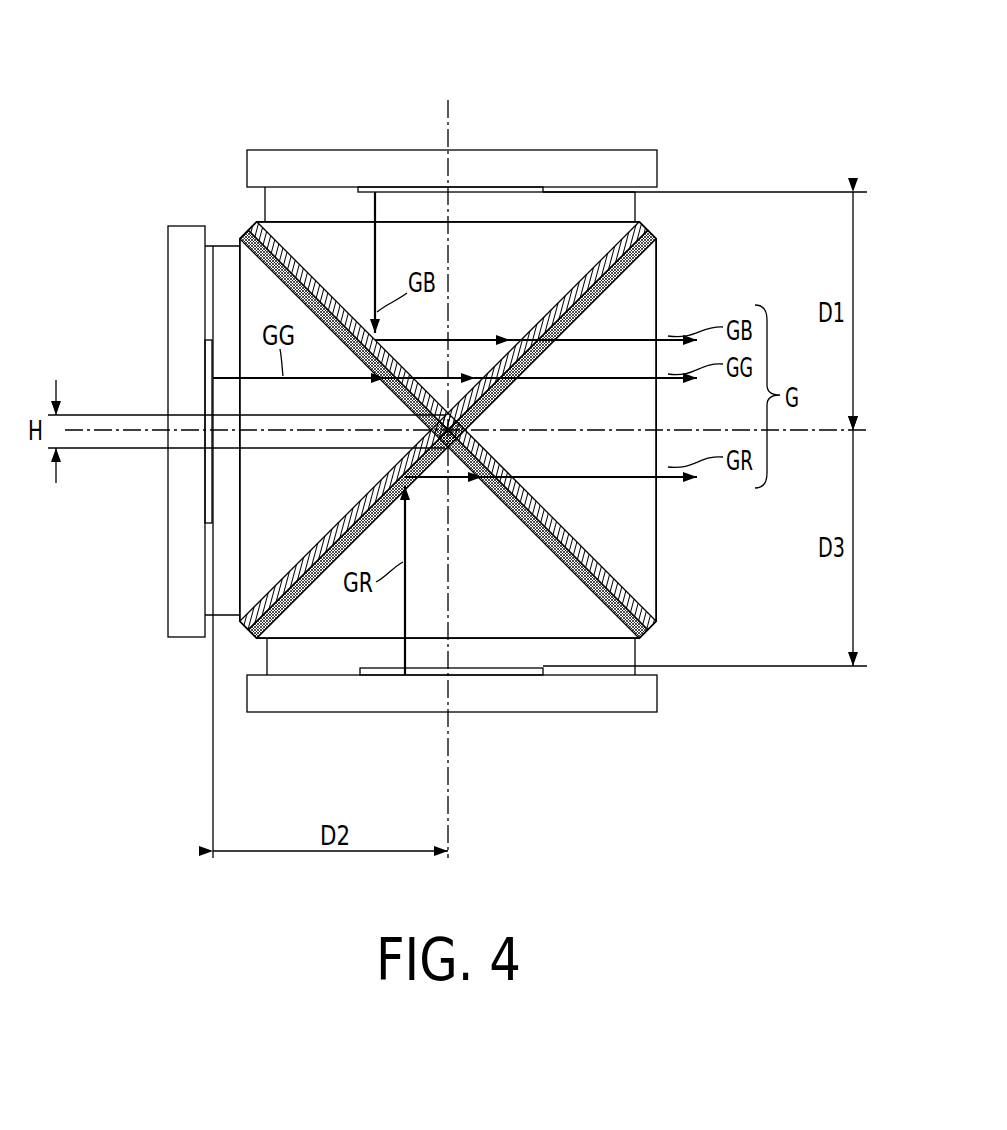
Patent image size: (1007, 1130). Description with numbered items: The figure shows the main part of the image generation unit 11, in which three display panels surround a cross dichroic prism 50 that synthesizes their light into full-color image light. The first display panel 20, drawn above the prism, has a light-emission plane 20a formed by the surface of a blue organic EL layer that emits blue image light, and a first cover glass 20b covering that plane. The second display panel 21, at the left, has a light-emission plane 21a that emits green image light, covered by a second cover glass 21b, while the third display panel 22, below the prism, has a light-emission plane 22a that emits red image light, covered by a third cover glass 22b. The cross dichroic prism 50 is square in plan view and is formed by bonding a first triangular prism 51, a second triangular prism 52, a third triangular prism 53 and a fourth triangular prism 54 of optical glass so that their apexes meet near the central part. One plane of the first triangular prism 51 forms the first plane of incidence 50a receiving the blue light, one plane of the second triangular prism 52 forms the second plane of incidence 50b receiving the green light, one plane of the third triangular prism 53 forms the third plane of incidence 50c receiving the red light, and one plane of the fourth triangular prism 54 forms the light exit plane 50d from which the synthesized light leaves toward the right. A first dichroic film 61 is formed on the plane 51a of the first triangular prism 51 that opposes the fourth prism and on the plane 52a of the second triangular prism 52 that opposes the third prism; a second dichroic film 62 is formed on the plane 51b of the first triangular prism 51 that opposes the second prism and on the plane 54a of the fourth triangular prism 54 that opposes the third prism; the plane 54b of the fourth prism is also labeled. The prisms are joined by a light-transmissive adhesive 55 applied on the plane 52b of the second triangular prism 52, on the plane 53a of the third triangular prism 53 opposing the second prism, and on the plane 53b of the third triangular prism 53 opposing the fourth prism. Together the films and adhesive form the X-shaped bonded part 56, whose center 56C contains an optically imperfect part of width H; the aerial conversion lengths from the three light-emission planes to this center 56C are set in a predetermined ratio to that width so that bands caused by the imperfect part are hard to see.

The image generation unit 11 is at (710, 100).
The first display panel 20 is at (237, 182).
The light-emission plane 20a is at (421, 192).
The first cover glass 20b is at (614, 210).
The second display panel 21 is at (196, 664).
The light-emission plane 21a is at (212, 508).
The second cover glass 21b is at (222, 273).
The third display panel 22 is at (681, 685).
The light-emission plane 22a is at (479, 668).
The third cover glass 22b is at (280, 655).
The cross dichroic prism 50 is at (667, 258).
The first plane of incidence 50a is at (488, 213).
The second plane of incidence 50b is at (240, 470).
The third plane of incidence 50c is at (412, 640).
The light exit plane 50d is at (657, 537).
The first triangular prism 51 is at (348, 236).
The plane of first triangular prism 51a is at (593, 270).
The plane of first triangular prism 51b is at (292, 242).
The second triangular prism 52 is at (253, 547).
The plane of second triangular prism 52a is at (265, 598).
The plane of second triangular prism 52b is at (290, 283).
The third triangular prism 53 is at (523, 633).
The plane of third triangular prism 53a is at (303, 593).
The plane of third triangular prism 53b is at (603, 632).
The fourth triangular prism 54 is at (640, 505).
The plane of fourth triangular prism 54a is at (640, 578).
The second face of fourth prism 54b is at (632, 262).
The light-transmissive adhesive 55 is at (617, 632).
The bonded part 56 is at (243, 226).
The center of bonded part 56C is at (445, 428).
The first dichroic film 61 is at (260, 610).
The second dichroic film 62 is at (272, 243).